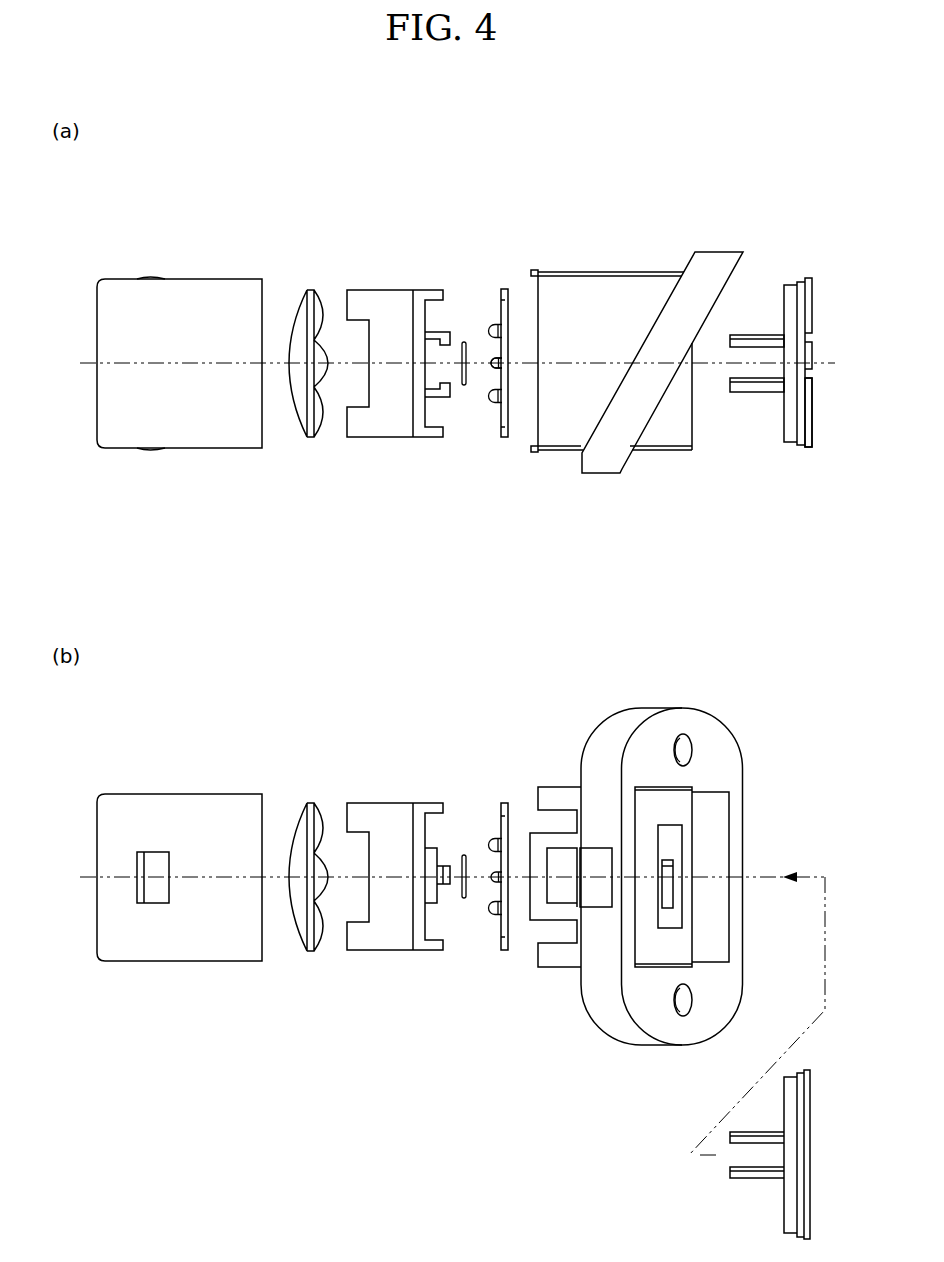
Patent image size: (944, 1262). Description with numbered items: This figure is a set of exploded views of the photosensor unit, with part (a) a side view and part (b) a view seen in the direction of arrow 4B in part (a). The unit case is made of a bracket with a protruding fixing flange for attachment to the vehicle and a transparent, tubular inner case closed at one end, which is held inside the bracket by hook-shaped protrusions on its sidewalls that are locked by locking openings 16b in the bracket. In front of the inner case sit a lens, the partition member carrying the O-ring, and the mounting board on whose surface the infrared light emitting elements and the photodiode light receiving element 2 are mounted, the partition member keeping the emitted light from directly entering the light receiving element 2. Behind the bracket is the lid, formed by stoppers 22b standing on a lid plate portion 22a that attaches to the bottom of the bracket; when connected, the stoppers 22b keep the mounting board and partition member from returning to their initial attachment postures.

The light receiving element 2 is at (492, 368).
The locking openings 16b is at (553, 894).
The lid plate portion 22a is at (800, 420).
The stoppers 22b is at (744, 392).
The arrow 4B is at (479, 482).